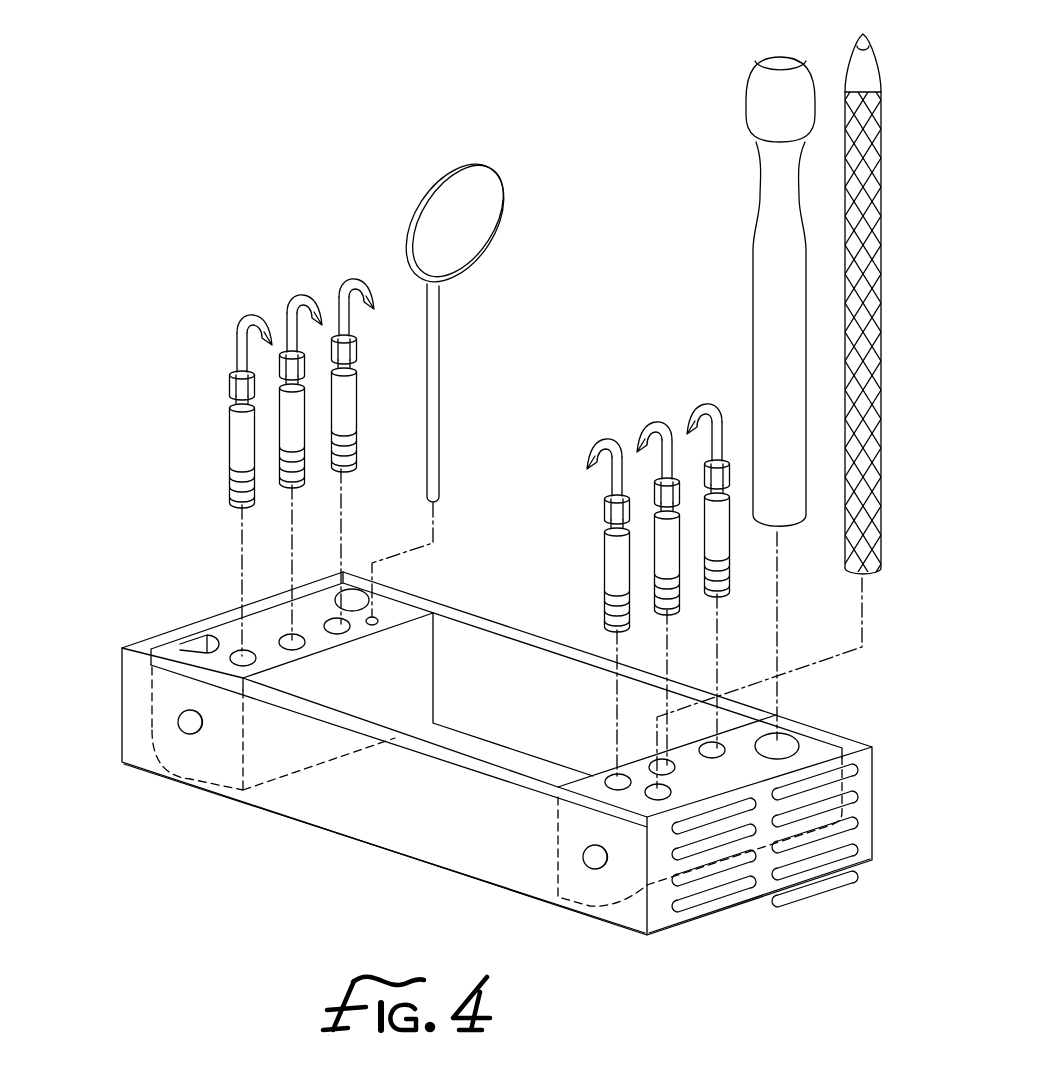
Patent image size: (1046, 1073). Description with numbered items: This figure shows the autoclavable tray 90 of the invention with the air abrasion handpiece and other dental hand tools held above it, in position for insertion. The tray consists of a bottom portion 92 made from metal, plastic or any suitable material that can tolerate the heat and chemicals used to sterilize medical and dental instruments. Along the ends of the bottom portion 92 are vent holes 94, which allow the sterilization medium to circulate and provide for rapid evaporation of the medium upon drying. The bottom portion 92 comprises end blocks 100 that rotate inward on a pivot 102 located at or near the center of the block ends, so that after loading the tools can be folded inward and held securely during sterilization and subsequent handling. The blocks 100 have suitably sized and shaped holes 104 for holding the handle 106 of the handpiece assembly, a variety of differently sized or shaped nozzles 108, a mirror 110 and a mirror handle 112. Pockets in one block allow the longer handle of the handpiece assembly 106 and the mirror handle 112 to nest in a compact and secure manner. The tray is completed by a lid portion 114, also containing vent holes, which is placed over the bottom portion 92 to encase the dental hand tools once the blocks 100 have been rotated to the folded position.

The autoclavable tray 90 is at (335, 848).
The bottom portion 92 is at (287, 818).
The vent holes 94 is at (703, 912).
The end blocks 100 is at (403, 625).
The pivot 102 is at (188, 724).
The holes 104 is at (243, 657).
The handle of the handpiece assembly 106 is at (776, 294).
The nozzles 108 is at (242, 445).
The mirror 110 is at (426, 200).
The mirror handle 112 is at (858, 50).
The lid portion 114 is at (205, 641).